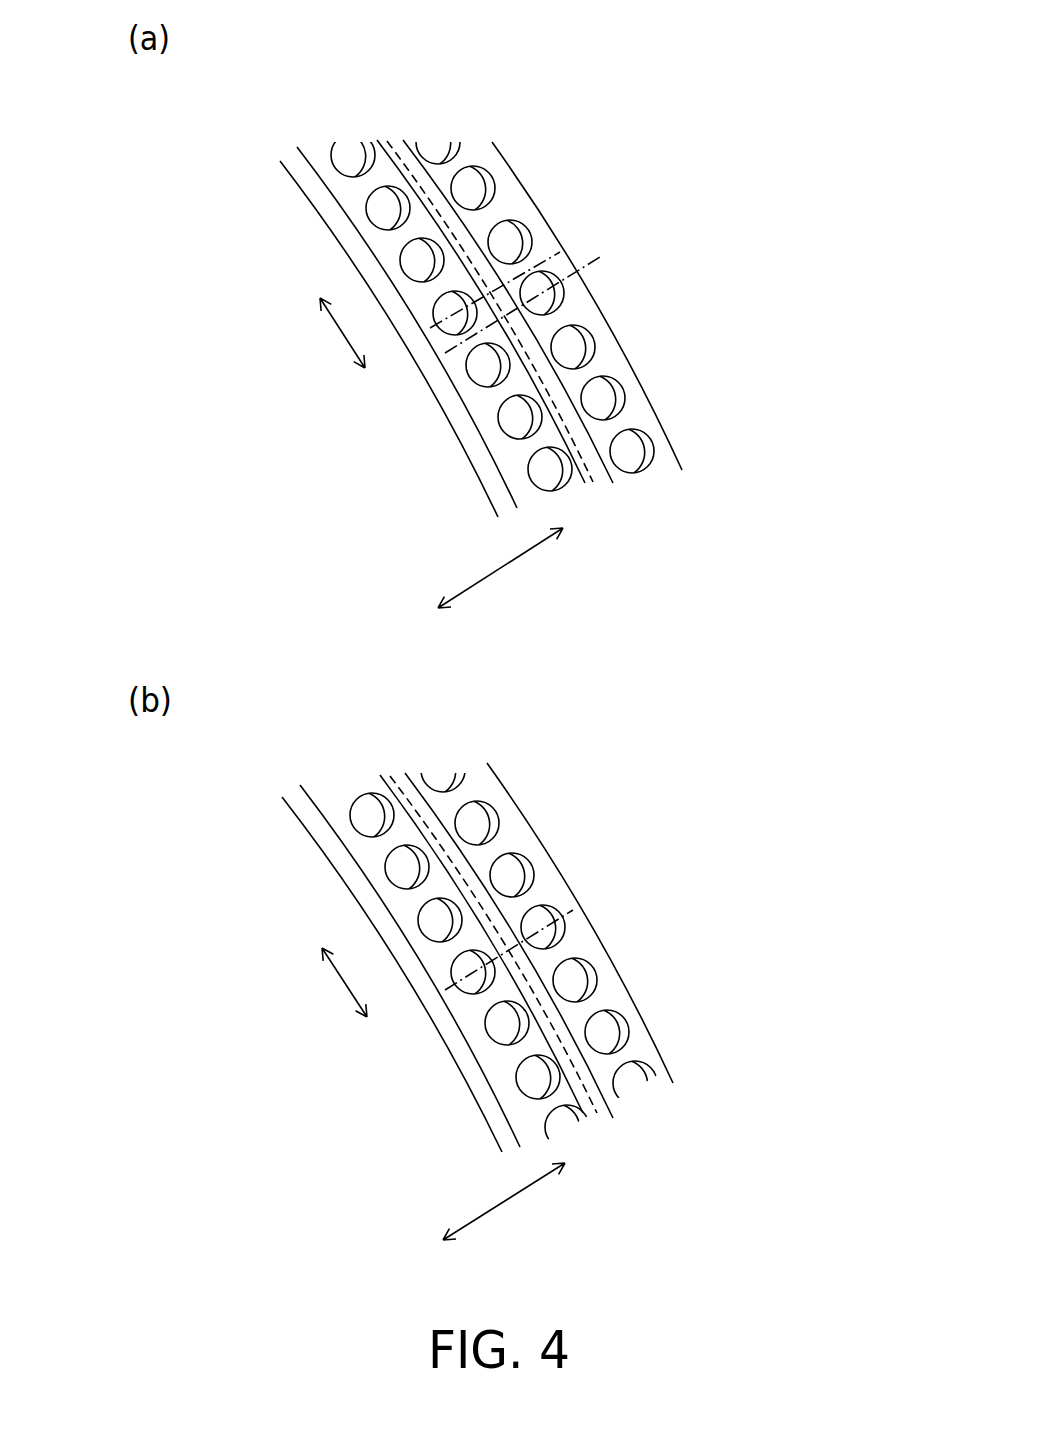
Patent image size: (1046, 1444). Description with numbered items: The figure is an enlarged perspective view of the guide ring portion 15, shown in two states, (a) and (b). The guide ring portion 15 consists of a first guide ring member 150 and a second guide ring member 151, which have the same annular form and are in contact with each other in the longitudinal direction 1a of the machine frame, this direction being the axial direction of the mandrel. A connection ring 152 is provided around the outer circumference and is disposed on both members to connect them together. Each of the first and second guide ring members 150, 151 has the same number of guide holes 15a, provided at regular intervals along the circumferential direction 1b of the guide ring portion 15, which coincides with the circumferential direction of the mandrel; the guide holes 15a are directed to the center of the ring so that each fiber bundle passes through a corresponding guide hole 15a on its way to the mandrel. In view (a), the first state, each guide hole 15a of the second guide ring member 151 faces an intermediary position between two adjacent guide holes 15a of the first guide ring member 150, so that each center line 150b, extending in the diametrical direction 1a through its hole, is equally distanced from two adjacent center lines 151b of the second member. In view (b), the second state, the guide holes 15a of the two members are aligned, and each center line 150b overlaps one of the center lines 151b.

The guide ring portion 15 is at (537, 180).
The guide holes 15a is at (381, 208).
The first guide ring member 150 is at (610, 362).
The center line 150b is at (573, 285).
The second guide ring member 151 is at (443, 397).
The center line 151b is at (543, 257).
The connection ring 152 is at (399, 139).
The longitudinal direction 1a is at (502, 570).
The circumferential direction 1b is at (335, 333).